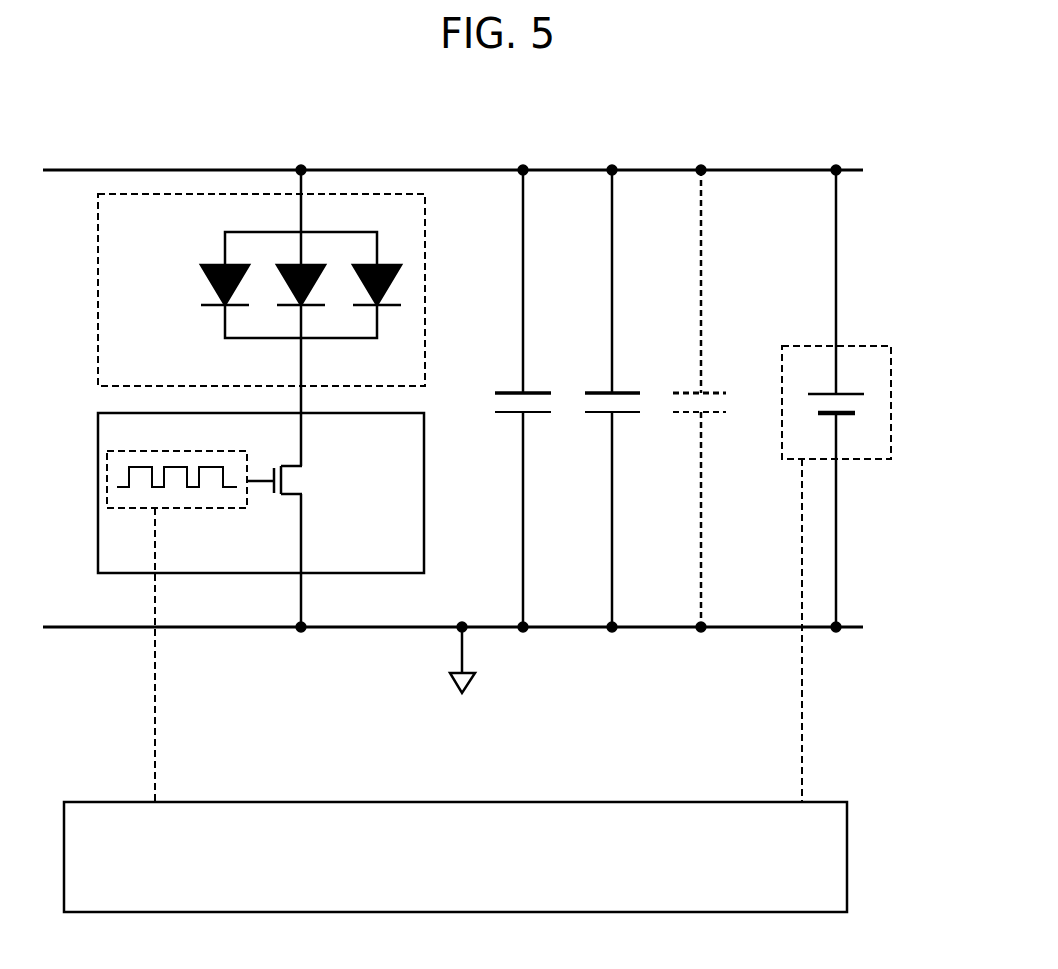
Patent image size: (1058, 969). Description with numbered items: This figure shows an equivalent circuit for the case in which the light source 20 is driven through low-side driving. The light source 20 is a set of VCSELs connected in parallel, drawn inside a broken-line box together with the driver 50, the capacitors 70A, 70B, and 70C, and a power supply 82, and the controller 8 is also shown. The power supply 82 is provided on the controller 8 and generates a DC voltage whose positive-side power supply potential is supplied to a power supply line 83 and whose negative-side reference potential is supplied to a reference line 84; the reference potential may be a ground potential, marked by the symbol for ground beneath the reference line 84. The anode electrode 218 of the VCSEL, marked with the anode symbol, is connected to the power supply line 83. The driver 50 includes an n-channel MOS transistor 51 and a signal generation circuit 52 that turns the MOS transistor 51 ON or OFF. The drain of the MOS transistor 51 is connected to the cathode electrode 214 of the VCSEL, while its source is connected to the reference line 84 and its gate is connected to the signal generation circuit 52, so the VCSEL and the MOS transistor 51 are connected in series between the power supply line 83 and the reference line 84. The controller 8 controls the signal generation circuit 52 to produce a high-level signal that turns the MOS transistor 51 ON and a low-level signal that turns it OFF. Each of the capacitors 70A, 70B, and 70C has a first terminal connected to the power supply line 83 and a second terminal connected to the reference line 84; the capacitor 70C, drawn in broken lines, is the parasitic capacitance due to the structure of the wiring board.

The power supply line 83 is at (500, 170).
The reference line 84 is at (500, 628).
The light source 20 is at (303, 290).
The anode electrode 218 is at (348, 210).
The cathode electrode 214 is at (312, 341).
The driver 50 is at (303, 607).
The MOS transistor 51 is at (300, 482).
The signal generation circuit 52 is at (178, 508).
The capacitor 70A is at (533, 390).
The capacitor 70B is at (622, 392).
The capacitor 70C is at (708, 390).
The power supply 82 is at (892, 407).
The controller 8 is at (713, 802).